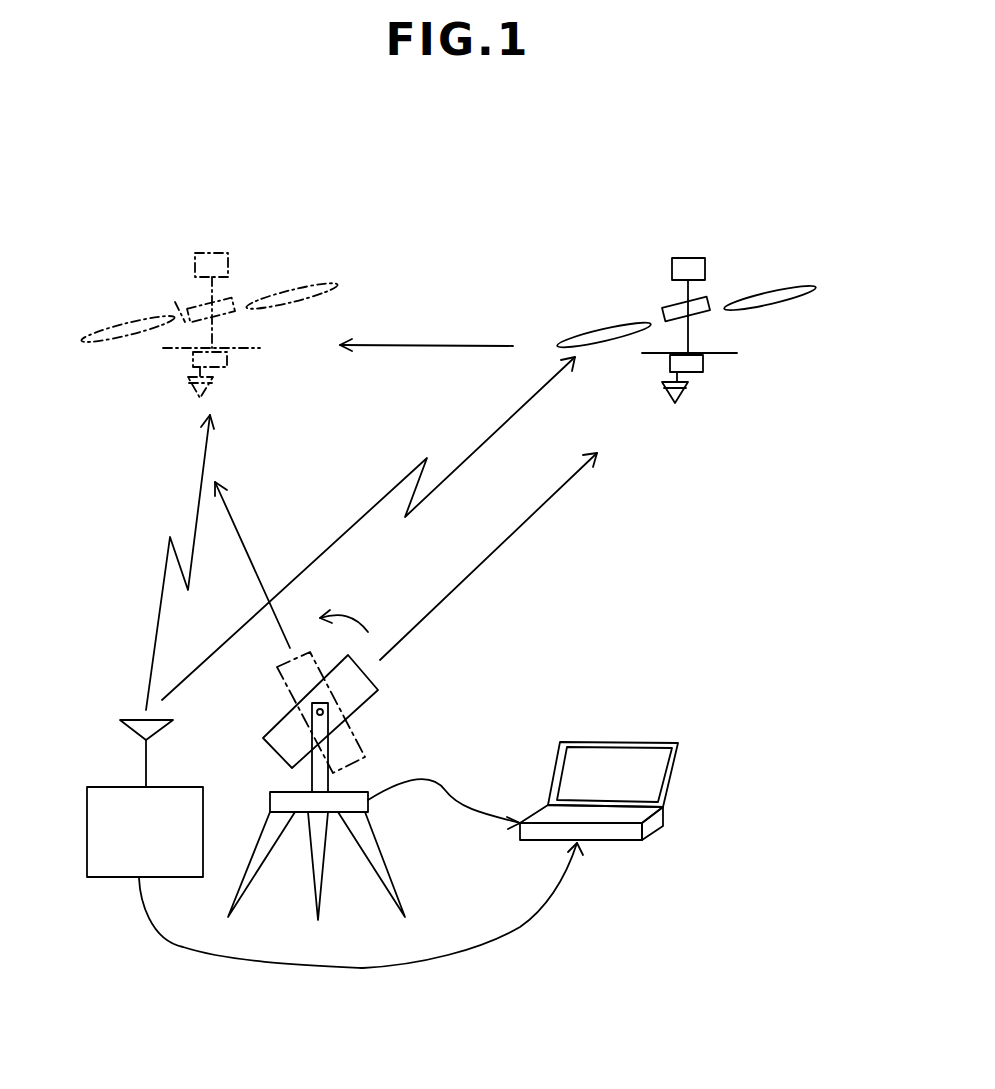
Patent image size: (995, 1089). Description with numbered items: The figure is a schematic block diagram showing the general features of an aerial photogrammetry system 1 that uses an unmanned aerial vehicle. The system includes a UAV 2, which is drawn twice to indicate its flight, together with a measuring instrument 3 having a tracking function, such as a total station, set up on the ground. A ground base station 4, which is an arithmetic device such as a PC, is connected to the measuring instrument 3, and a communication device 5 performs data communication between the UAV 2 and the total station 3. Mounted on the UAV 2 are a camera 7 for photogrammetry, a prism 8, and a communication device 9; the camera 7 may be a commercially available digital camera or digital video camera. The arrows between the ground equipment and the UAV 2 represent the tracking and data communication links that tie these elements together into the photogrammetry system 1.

The aerial photogrammetry system 1 is at (436, 134).
The UAV 2 is at (185, 247).
The measuring instrument 3 is at (360, 747).
The ground base station 4 is at (633, 740).
The communication device 5 is at (103, 785).
The camera 7 is at (693, 373).
The prism 8 is at (672, 397).
The communication device 9 is at (663, 308).